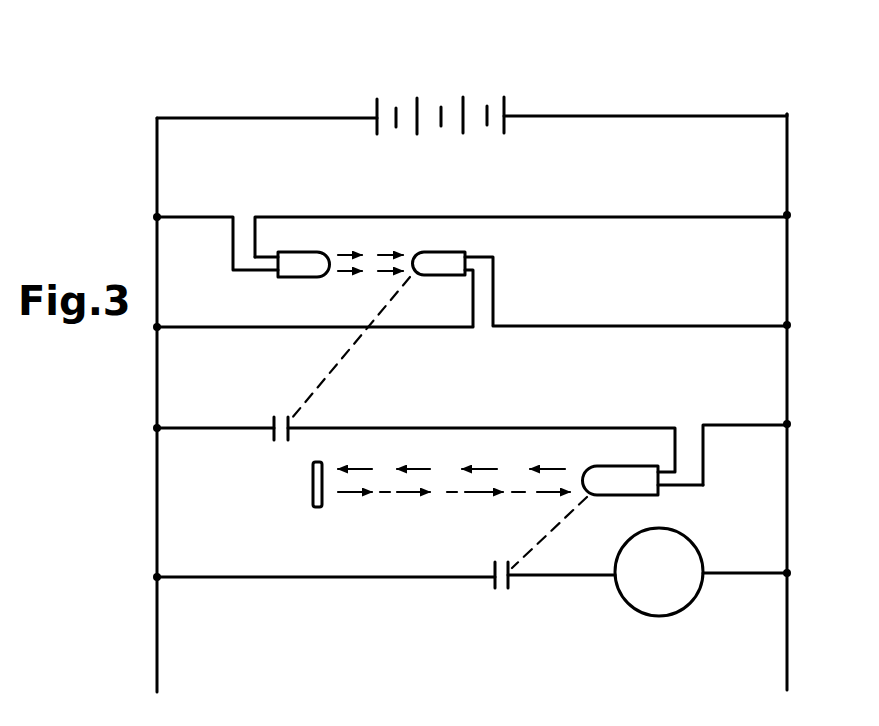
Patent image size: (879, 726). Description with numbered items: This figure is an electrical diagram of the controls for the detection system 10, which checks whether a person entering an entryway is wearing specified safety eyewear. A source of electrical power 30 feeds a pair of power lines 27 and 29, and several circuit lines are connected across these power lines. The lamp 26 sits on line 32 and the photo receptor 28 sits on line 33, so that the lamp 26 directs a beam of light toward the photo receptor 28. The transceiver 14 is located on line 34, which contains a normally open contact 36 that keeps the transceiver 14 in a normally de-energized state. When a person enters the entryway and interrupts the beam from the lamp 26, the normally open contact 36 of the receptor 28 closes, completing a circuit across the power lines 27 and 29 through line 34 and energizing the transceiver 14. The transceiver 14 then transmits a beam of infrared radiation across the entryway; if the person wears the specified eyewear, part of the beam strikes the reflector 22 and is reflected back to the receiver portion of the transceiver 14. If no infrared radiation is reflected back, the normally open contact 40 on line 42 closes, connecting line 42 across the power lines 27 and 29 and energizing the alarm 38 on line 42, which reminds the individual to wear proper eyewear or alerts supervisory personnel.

The detection system 10 is at (152, 92).
The transceiver 14 is at (643, 486).
The reflector 22 is at (313, 495).
The lamp 26 is at (306, 275).
The power line 27 is at (157, 181).
The photo receptor 28 is at (448, 262).
The power line 29 is at (787, 170).
The source of electrical power 30 is at (379, 118).
The line 32 is at (604, 216).
The line 33 is at (609, 326).
The line 34 is at (473, 427).
The normally open contact 36 is at (270, 426).
The alarm 38 is at (656, 601).
The normally open contact 40 is at (493, 580).
The line 42 is at (379, 578).